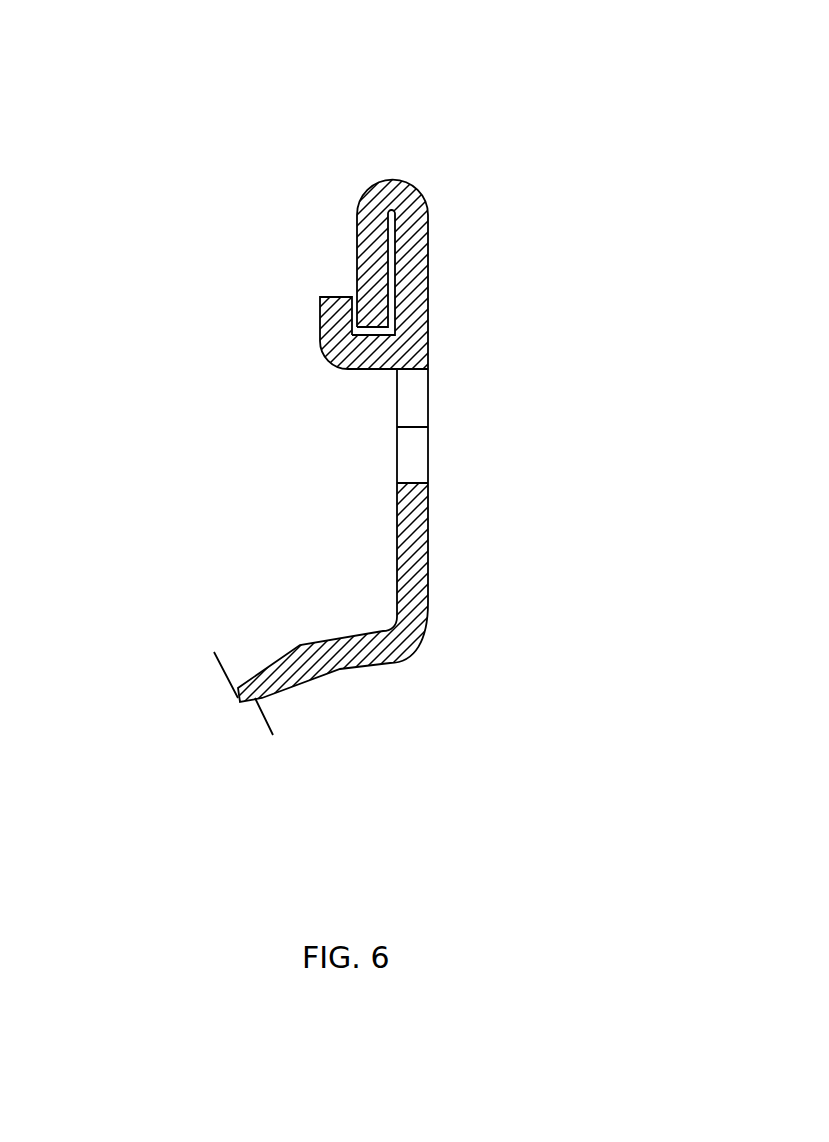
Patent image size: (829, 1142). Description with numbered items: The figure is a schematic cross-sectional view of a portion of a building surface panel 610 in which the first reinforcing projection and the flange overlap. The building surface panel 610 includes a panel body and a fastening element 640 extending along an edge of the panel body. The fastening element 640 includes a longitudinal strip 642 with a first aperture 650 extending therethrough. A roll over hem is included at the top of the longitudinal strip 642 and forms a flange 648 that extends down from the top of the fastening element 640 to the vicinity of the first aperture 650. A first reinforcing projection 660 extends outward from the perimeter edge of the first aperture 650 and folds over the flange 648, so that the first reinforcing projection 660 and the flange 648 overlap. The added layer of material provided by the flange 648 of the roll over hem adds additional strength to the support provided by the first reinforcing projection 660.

The building surface panel 610 is at (545, 112).
The fastening element 640 is at (160, 452).
The longitudinal strip 642 is at (415, 535).
The flange 648 is at (357, 238).
The first aperture 650 is at (413, 420).
The first reinforcing projection 660 is at (320, 335).